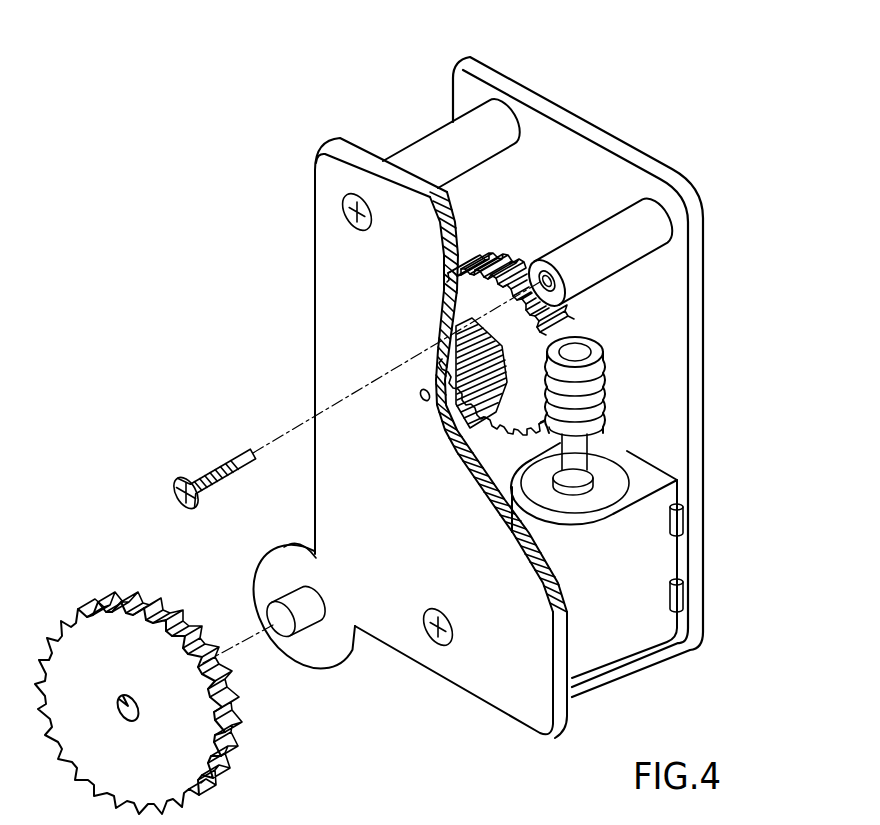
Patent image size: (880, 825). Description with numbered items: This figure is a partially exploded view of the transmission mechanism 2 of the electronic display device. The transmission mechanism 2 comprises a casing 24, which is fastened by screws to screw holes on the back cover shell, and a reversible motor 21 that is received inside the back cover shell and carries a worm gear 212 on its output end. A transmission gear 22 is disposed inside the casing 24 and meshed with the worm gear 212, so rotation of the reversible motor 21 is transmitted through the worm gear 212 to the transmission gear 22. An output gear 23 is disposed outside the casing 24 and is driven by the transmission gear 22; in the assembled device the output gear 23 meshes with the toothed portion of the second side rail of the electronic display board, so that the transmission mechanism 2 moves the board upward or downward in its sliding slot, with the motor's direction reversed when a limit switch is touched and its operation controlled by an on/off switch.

The transmission mechanism 2 is at (666, 150).
The reversible motor 21 is at (650, 557).
The worm gear 212 is at (560, 400).
The transmission gear 22 is at (513, 360).
The output gear 23 is at (85, 632).
The casing 24 is at (596, 135).